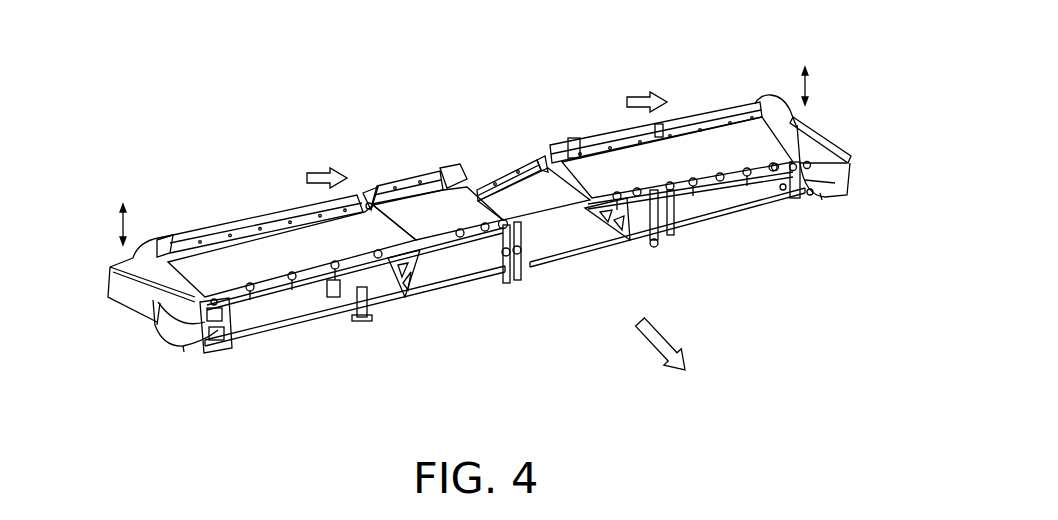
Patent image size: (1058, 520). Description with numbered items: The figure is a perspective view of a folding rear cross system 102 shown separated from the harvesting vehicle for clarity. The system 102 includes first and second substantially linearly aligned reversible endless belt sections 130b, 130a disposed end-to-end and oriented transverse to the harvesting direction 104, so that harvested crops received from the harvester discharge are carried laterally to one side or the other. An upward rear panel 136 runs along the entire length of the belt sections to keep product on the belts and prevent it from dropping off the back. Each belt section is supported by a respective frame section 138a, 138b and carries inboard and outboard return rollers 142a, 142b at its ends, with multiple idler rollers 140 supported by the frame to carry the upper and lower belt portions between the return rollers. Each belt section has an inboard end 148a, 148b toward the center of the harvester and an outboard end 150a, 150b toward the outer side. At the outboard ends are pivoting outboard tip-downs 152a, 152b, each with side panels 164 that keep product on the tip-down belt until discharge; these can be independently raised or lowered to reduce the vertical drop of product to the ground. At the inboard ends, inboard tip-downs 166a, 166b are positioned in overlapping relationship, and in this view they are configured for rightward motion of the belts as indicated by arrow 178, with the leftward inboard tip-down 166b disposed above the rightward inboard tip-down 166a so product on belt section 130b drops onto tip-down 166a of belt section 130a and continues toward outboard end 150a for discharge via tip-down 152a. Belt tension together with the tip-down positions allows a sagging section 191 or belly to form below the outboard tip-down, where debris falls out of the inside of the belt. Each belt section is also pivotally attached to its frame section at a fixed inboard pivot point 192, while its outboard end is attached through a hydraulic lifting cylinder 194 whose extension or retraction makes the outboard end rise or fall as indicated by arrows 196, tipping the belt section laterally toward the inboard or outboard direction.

The folding rear cross system 102 is at (190, 90).
The harvesting direction 104 is at (648, 350).
The second belt section 130a is at (325, 245).
The first belt section 130b is at (686, 152).
The upward rear panel 136 is at (232, 233).
The first frame section 138a is at (330, 313).
The second frame section 138b is at (720, 217).
The idler rollers 140 is at (250, 293).
The inboard return roller 142a is at (518, 222).
The outboard return roller 142b is at (518, 240).
The inboard end 148a is at (447, 165).
The inboard end 148b is at (484, 162).
The outboard end 150a is at (162, 378).
The outboard end 150b is at (864, 149).
The outboard tip-down 152a is at (133, 298).
The outboard tip-down 152b is at (812, 135).
The side panels 164 is at (155, 326).
The inboard tip-down 166a is at (440, 220).
The inboard tip-down 166b is at (520, 215).
The arrow 178 is at (315, 172).
The sagging section 191 is at (181, 342).
The fixed inboard pivot point 192 is at (417, 280).
The hydraulic lifting cylinder 194 is at (213, 352).
The arrows 196 is at (117, 222).